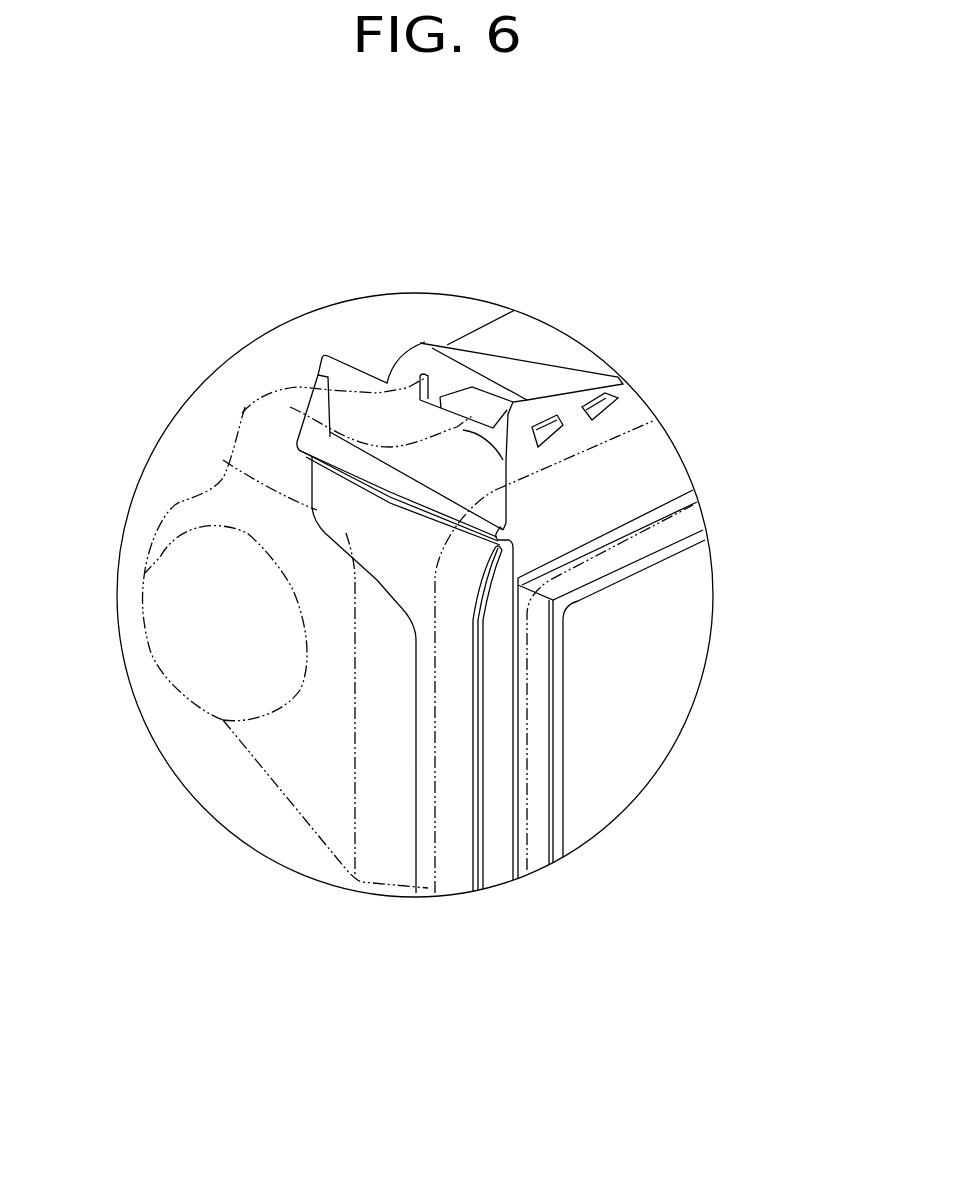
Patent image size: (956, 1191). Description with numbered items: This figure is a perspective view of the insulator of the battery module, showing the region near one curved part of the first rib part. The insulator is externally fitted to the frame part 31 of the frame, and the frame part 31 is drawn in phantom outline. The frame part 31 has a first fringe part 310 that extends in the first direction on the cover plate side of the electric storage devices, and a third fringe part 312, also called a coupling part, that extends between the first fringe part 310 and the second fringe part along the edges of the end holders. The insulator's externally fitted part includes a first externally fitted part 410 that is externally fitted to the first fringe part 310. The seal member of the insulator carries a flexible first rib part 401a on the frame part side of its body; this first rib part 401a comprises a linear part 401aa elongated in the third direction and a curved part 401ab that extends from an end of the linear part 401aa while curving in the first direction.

The frame part 31 is at (247, 407).
The first fringe part 310 is at (560, 500).
The third fringe part 312 is at (455, 767).
The first externally fitted part 410 is at (630, 463).
The first rib part 401a is at (486, 703).
The linear part 401aa is at (478, 768).
The curved part 401ab is at (528, 590).